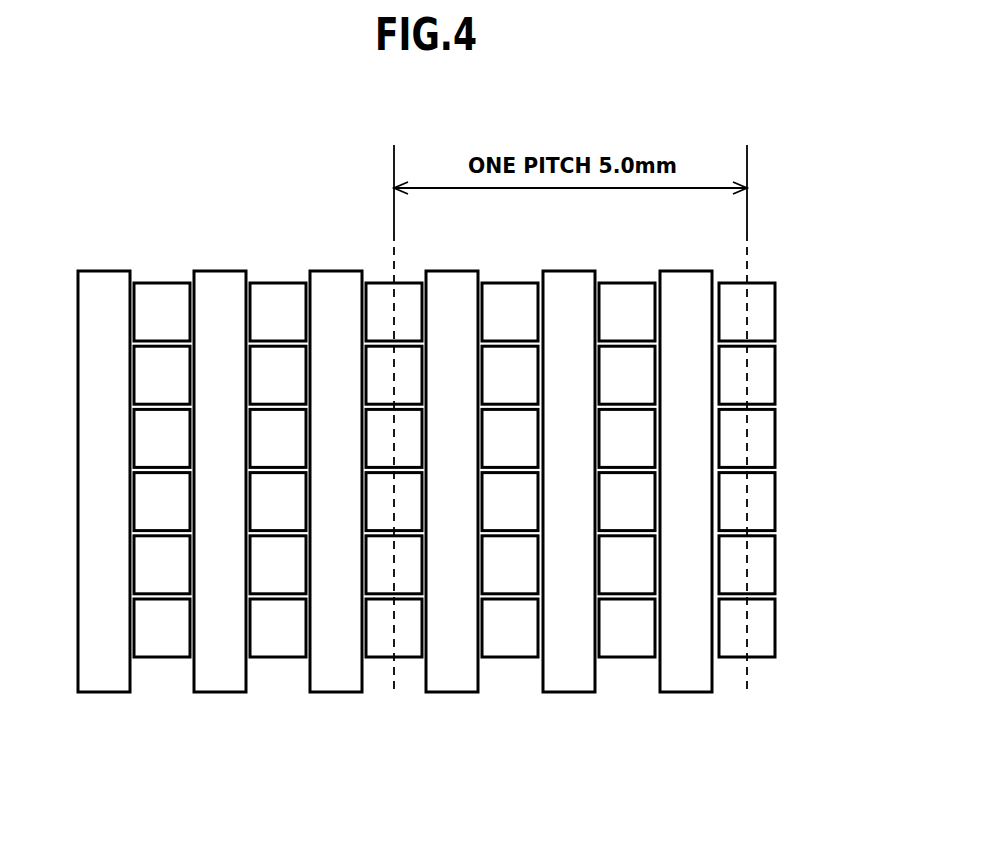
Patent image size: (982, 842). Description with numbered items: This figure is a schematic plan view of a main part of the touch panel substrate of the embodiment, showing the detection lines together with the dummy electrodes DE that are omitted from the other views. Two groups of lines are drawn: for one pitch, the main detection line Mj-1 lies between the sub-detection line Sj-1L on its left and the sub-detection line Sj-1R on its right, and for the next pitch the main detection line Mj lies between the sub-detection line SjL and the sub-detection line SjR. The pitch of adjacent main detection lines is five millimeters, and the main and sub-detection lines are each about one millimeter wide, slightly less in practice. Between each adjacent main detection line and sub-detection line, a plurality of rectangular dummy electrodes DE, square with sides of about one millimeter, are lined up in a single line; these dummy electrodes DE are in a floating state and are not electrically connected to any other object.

The dummy electrodes DE is at (162, 657).
The sub-detection line Sj-1L is at (104, 692).
The main detection line Mj-1 is at (220, 692).
The sub-detection line Sj-1R is at (336, 692).
The sub-detection line SjL is at (452, 692).
The main detection line Mj is at (569, 692).
The sub-detection line SjR is at (686, 692).